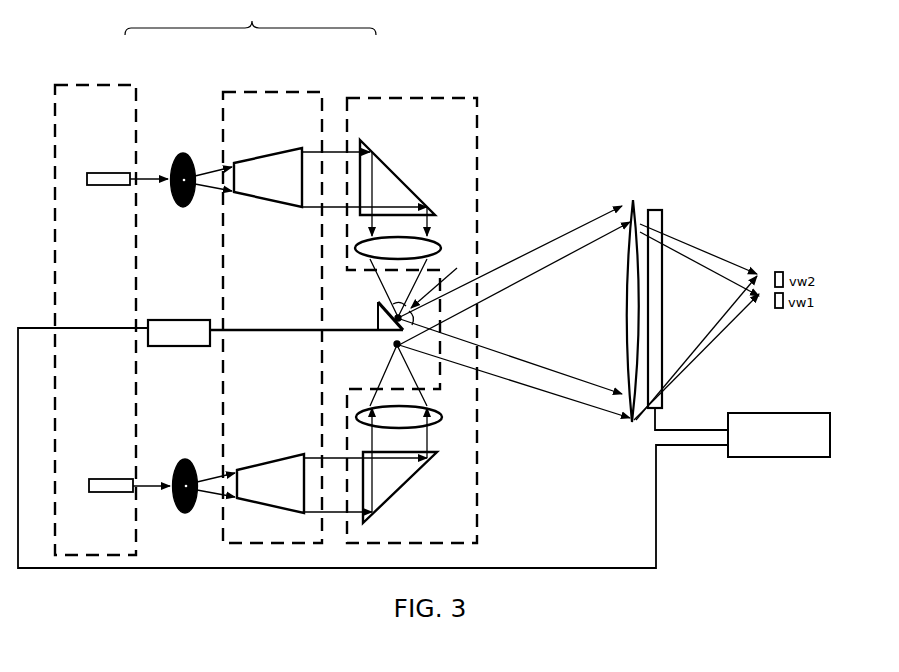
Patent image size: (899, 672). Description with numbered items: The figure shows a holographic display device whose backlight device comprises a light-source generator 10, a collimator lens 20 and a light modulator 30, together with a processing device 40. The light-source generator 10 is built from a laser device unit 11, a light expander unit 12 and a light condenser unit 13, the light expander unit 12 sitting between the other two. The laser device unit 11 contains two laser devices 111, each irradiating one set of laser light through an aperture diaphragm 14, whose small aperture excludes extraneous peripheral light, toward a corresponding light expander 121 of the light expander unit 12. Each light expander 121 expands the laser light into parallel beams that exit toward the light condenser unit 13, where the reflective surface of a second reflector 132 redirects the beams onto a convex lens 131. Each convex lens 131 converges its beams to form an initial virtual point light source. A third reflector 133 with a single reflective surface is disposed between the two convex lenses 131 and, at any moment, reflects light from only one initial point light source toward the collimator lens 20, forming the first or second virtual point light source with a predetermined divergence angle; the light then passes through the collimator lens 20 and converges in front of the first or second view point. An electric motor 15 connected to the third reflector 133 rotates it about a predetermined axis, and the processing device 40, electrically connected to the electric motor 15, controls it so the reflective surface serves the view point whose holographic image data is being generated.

The light-source generator 10 is at (250, 21).
The laser device unit 11 is at (75, 85).
The light expander unit 12 is at (248, 92).
The light condenser unit 13 is at (402, 98).
The aperture diaphragm 14 is at (177, 152).
The electric motor 15 is at (167, 320).
The collimator lens 20 is at (634, 202).
The light modulator 30 is at (662, 212).
The processing device 40 is at (775, 413).
The laser device 111 is at (95, 172).
The light expander 121 is at (250, 158).
The convex lens 131 is at (430, 239).
The second reflector 132 is at (392, 173).
The third reflector 133 is at (378, 313).